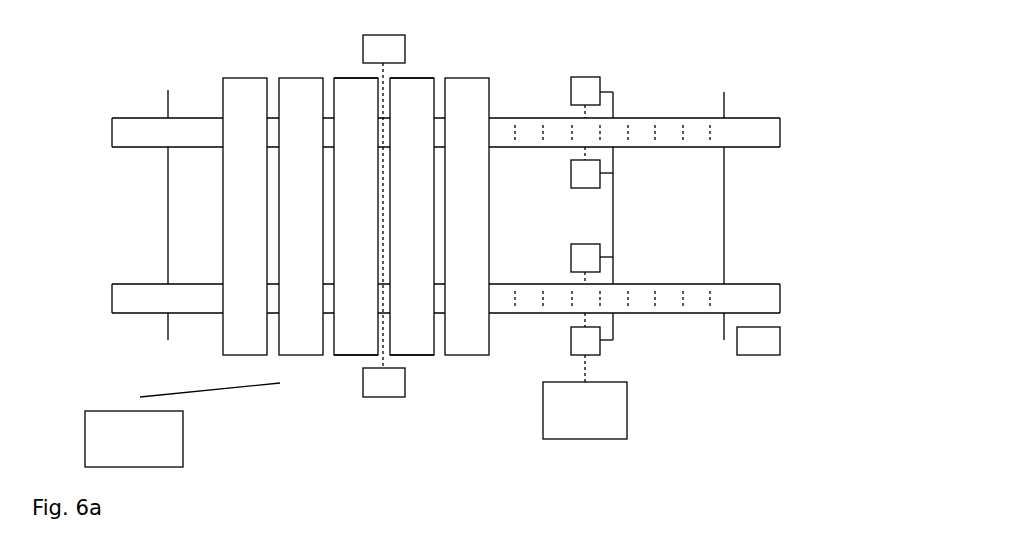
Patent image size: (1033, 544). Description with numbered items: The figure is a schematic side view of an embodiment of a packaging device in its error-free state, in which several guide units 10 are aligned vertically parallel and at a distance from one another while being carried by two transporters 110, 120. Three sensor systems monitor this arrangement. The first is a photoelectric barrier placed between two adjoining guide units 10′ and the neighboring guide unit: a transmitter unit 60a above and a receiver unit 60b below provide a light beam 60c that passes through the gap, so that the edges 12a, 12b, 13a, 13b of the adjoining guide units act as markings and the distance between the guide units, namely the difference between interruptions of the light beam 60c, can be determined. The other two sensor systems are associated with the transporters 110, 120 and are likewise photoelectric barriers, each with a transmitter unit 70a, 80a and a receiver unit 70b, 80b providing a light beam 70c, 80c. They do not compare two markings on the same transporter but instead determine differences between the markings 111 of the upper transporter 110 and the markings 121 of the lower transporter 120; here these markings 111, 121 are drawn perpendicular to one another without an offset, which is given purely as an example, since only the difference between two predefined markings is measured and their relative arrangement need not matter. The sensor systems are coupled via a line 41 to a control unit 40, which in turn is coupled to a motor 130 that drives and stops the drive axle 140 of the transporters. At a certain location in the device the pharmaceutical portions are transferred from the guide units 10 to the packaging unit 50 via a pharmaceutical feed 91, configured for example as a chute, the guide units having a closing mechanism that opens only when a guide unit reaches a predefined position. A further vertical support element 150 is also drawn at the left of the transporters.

The guide unit 10 is at (252, 90).
The guide unit 10′ is at (356, 216).
The edge 12a is at (390, 82).
The edge 12b is at (370, 80).
The edge 13a is at (397, 350).
The edge 13b is at (372, 352).
The control unit 40 is at (587, 410).
The line 41 is at (613, 160).
The packaging unit 50 is at (140, 439).
The transmitter unit 60a is at (383, 48).
The receiver unit 60b is at (383, 383).
The light beam 60c is at (380, 323).
The transmitter unit 70a is at (587, 92).
The receiver unit 70b is at (587, 173).
The light beam 70c is at (580, 133).
The transmitter unit 80a is at (587, 258).
The receiver unit 80b is at (580, 342).
The light beam 80c is at (583, 300).
The pharmaceutical feed 91 is at (260, 387).
The transporter 110 is at (127, 133).
The marking 111 is at (518, 132).
The transporter 120 is at (767, 299).
The marking 121 is at (685, 300).
The motor 130 is at (767, 340).
The drive axle 140 is at (724, 105).
The left support 150 is at (168, 108).